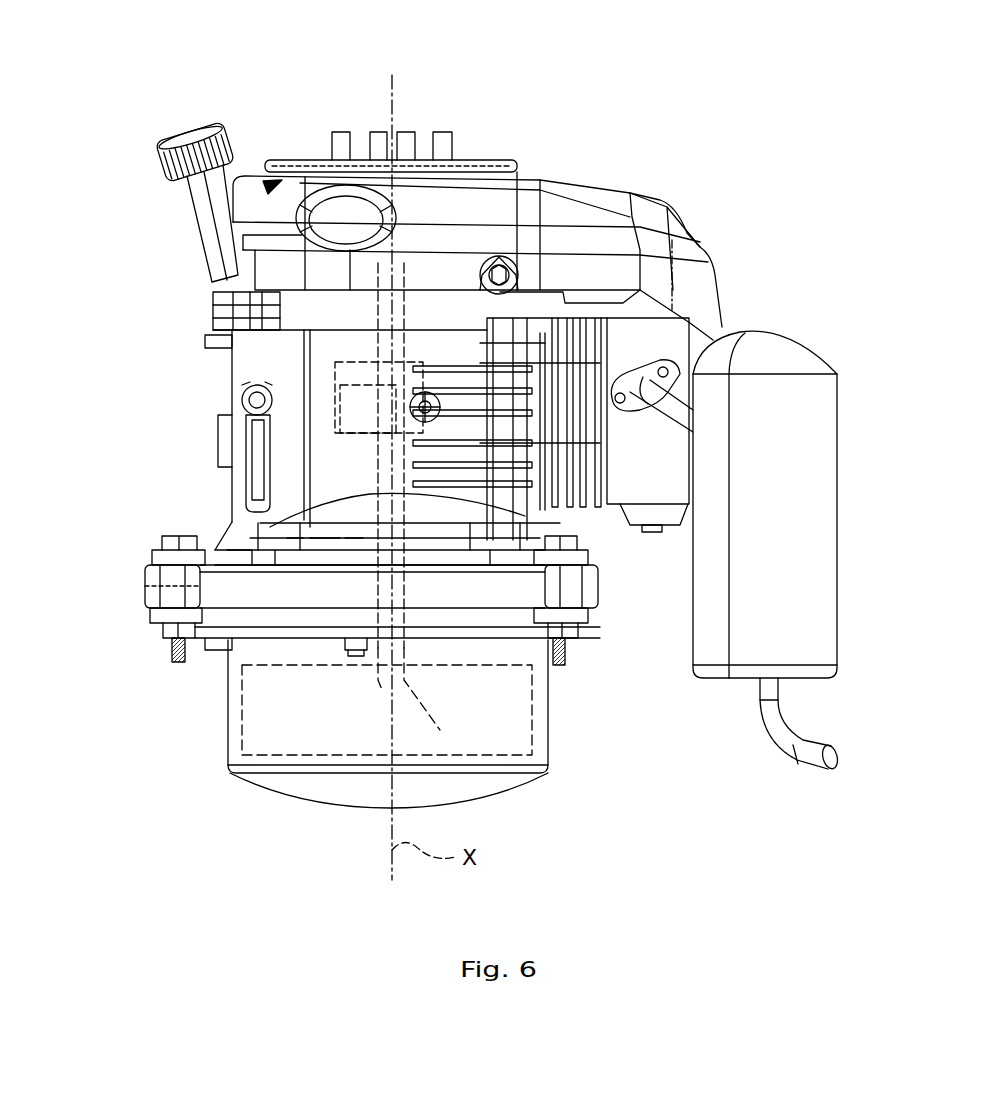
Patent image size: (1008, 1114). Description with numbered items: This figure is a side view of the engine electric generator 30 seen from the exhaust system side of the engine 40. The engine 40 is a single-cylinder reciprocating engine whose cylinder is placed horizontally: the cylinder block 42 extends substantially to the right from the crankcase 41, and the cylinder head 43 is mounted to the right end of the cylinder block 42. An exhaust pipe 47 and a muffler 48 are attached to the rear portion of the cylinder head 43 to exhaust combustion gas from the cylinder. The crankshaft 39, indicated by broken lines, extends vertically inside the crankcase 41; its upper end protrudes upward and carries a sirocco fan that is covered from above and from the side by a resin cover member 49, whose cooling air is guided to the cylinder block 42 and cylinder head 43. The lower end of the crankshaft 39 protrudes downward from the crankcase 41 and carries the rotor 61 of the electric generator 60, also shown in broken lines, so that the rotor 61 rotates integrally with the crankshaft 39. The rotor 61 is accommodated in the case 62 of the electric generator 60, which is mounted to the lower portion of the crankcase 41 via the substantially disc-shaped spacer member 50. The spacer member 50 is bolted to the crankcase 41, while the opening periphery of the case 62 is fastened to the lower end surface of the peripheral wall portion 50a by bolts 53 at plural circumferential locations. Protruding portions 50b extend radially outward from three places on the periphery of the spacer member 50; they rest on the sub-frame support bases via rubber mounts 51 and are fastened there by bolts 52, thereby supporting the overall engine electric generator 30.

The engine electric generator 30 is at (230, 110).
The crankshaft 39 is at (429, 697).
The engine 40 is at (222, 398).
The crankcase 41 is at (292, 447).
The cylinder block 42 is at (572, 500).
The cylinder head 43 is at (665, 485).
The exhaust pipe 47 is at (652, 383).
The muffler 48 is at (800, 356).
The cover member 49 is at (585, 198).
The spacer member 50 is at (170, 637).
The peripheral wall portion 50a is at (300, 592).
The protruding portions 50b is at (160, 590).
The rubber mounts 51 is at (165, 557).
The bolts 52 is at (172, 540).
The bolts 53 is at (352, 652).
The electric generator 60 is at (232, 775).
The rotor 61 is at (535, 740).
The case 62 is at (270, 790).